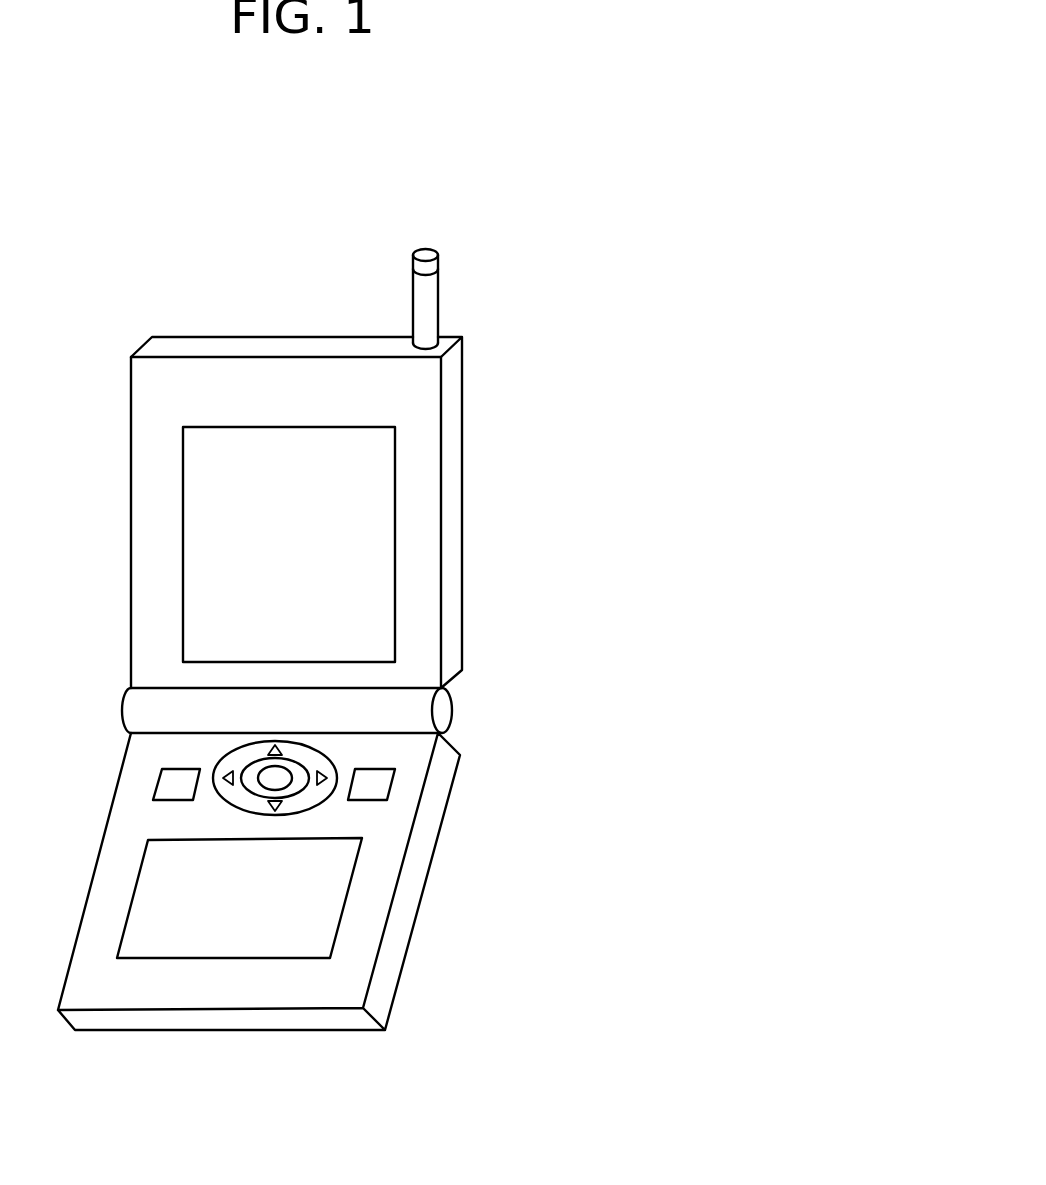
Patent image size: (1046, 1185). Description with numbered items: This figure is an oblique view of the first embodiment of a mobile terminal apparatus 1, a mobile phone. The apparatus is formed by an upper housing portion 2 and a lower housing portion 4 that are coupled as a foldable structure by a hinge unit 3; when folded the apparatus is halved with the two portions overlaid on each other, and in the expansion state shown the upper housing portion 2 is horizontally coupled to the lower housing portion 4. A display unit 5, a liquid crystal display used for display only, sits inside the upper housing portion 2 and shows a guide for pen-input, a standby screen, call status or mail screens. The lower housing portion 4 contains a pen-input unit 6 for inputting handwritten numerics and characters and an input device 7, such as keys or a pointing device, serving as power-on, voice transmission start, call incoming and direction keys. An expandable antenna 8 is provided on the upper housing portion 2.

The mobile terminal apparatus 1 is at (290, 302).
The upper housing portion 2 is at (463, 436).
The hinge unit 3 is at (452, 712).
The lower housing portion 4 is at (303, 1030).
The display unit 5 is at (395, 557).
The pen-input unit 6 is at (350, 888).
The input device 7 is at (393, 808).
The antenna 8 is at (439, 300).